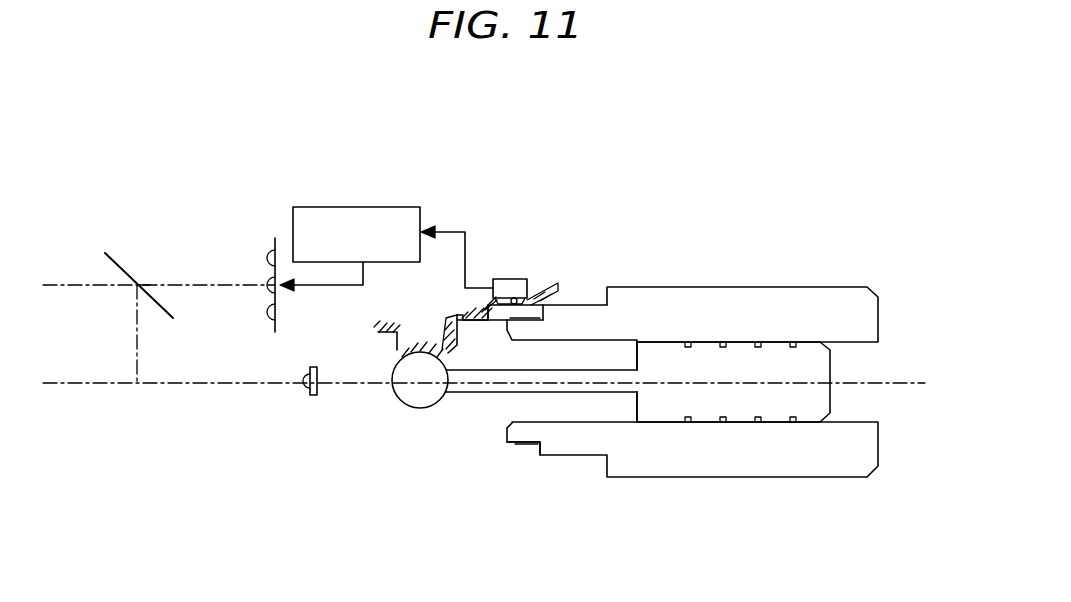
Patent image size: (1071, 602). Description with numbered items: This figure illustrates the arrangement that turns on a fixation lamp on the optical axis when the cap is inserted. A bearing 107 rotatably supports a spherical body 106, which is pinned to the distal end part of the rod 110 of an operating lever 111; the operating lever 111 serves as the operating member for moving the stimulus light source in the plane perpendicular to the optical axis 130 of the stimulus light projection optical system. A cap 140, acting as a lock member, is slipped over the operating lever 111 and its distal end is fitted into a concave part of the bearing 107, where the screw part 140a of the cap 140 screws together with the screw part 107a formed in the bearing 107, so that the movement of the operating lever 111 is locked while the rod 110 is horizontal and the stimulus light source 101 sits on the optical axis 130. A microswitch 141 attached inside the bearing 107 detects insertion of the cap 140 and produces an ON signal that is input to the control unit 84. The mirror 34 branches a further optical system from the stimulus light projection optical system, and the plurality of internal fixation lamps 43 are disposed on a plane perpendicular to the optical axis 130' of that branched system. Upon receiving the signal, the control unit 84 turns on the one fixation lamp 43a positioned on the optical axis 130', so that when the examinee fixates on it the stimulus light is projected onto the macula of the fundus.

The mirror 34 is at (107, 253).
The optical axis 130 is at (482, 382).
The optical axis 130' is at (180, 240).
The internal fixation lamps 43 is at (267, 238).
The fixation lamp 43a is at (263, 302).
The control unit 84 is at (342, 205).
The microswitch 141 is at (508, 278).
The spherical body 106 is at (418, 395).
The bearing 107 is at (404, 325).
The screw part 107a is at (477, 322).
The rod 110 is at (575, 378).
The operating lever 111 is at (767, 372).
The cap 140 is at (692, 298).
The screw part 140a is at (516, 443).
The stimulus light source 101 is at (312, 395).